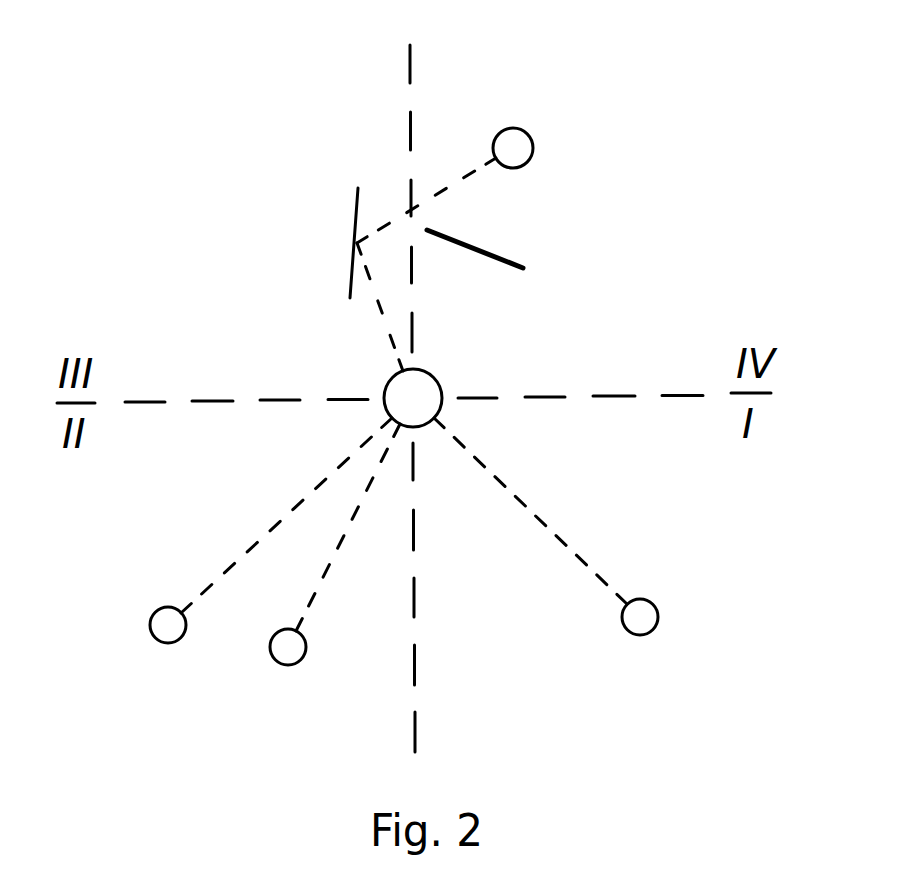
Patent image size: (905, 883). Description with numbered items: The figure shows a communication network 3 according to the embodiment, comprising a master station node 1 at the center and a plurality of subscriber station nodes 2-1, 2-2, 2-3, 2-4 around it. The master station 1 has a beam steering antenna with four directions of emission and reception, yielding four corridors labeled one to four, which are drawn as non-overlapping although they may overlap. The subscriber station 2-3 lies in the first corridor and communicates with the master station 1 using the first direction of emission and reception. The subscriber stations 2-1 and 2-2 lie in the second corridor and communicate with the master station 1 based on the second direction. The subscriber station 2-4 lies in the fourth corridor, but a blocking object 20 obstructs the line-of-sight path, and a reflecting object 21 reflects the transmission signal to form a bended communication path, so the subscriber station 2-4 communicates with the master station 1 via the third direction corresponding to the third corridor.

The master station node 1 is at (435, 379).
The subscriber station node 2-1 is at (150, 622).
The subscriber station node 2-2 is at (286, 665).
The subscriber station node 2-3 is at (658, 617).
The subscriber station node 2-4 is at (515, 128).
The communication network 3 is at (727, 121).
The blocking object 20 is at (485, 252).
The reflecting object 21 is at (352, 222).